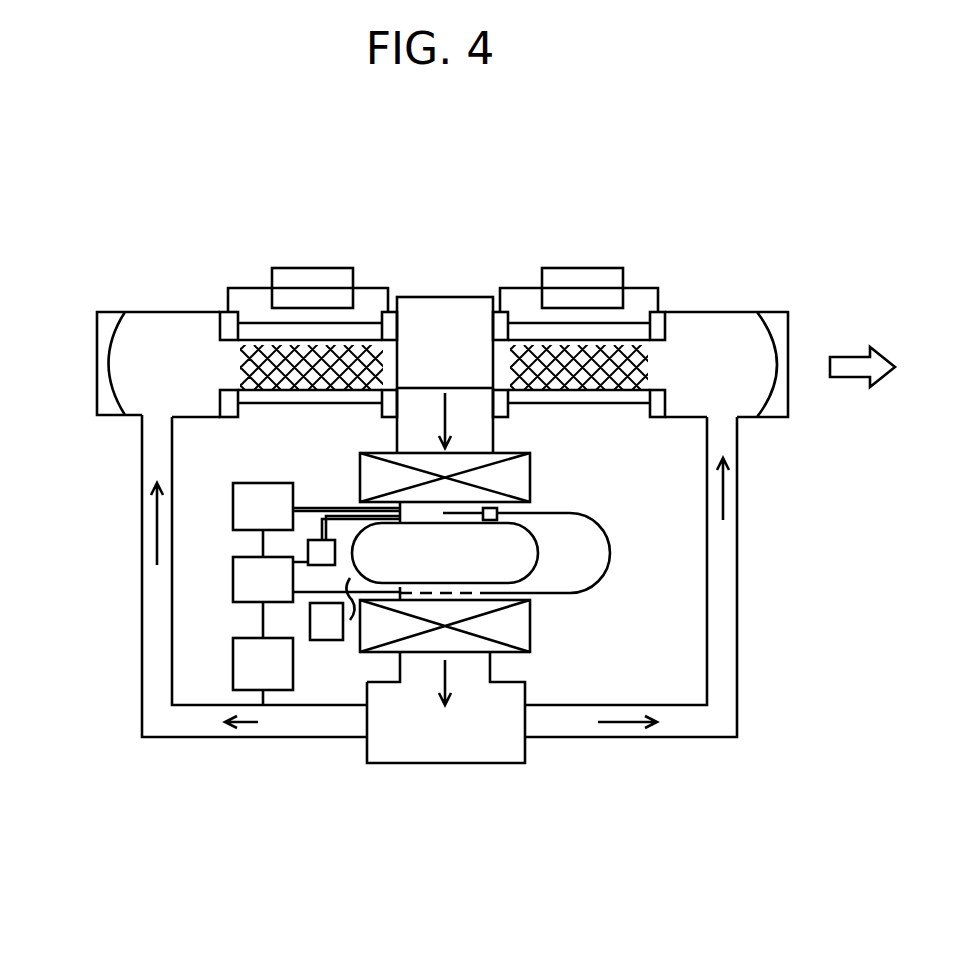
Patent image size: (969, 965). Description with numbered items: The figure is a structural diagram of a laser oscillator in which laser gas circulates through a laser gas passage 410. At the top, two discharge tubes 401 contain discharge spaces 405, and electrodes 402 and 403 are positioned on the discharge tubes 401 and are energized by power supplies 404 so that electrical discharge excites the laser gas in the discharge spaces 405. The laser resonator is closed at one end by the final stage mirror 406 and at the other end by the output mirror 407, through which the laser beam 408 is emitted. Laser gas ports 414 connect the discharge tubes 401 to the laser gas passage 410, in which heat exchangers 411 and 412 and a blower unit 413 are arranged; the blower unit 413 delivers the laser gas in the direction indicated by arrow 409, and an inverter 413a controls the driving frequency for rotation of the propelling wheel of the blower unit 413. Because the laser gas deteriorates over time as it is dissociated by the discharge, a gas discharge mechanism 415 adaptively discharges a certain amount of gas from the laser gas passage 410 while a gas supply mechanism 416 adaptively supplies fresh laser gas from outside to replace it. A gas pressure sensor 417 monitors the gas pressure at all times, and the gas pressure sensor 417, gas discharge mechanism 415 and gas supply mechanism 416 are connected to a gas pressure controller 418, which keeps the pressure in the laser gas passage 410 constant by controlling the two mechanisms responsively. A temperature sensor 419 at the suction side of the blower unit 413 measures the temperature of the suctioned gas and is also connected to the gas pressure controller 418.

The discharge tube 401 is at (275, 392).
The electrode 402 is at (227, 398).
The electrode 403 is at (498, 398).
The power supply 404 is at (298, 278).
The discharge space 405 is at (272, 352).
The final stage mirror 406 is at (100, 410).
The output mirror 407 is at (785, 312).
The laser beam 408 is at (845, 352).
The arrow 409 is at (152, 525).
The laser gas passage 410 is at (140, 672).
The heat exchanger 411 is at (530, 493).
The heat exchanger 412 is at (528, 627).
The blower unit 413 is at (530, 555).
The inverter 413a is at (327, 633).
The laser gas port 414 is at (167, 407).
The gas discharge mechanism 415 is at (240, 520).
The gas supply mechanism 416 is at (240, 667).
The gas pressure sensor 417 is at (323, 553).
The gas pressure controller 418 is at (243, 570).
The temperature sensor 419 is at (497, 517).